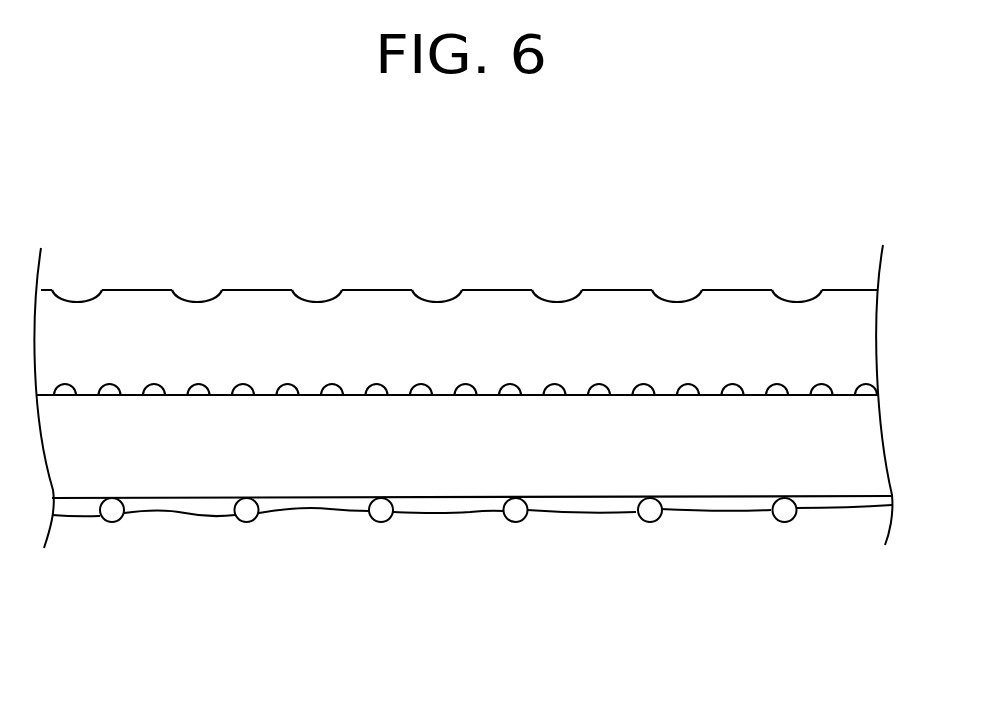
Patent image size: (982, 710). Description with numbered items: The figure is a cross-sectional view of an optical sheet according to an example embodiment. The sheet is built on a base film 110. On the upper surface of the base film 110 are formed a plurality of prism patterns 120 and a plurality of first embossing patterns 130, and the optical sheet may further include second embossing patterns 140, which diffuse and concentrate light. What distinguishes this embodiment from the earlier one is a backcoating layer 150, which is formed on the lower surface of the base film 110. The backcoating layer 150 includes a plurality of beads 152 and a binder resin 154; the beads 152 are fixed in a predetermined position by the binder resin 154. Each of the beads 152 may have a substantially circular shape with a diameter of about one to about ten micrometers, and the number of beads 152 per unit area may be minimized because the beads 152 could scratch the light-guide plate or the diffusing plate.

The base film 110 is at (695, 460).
The prism patterns 120 is at (752, 323).
The first embossing patterns 130 is at (443, 297).
The second embossing patterns 140 is at (637, 378).
The backcoating layer 150 is at (472, 586).
The beads 152 is at (493, 621).
The binder resin 154 is at (470, 500).